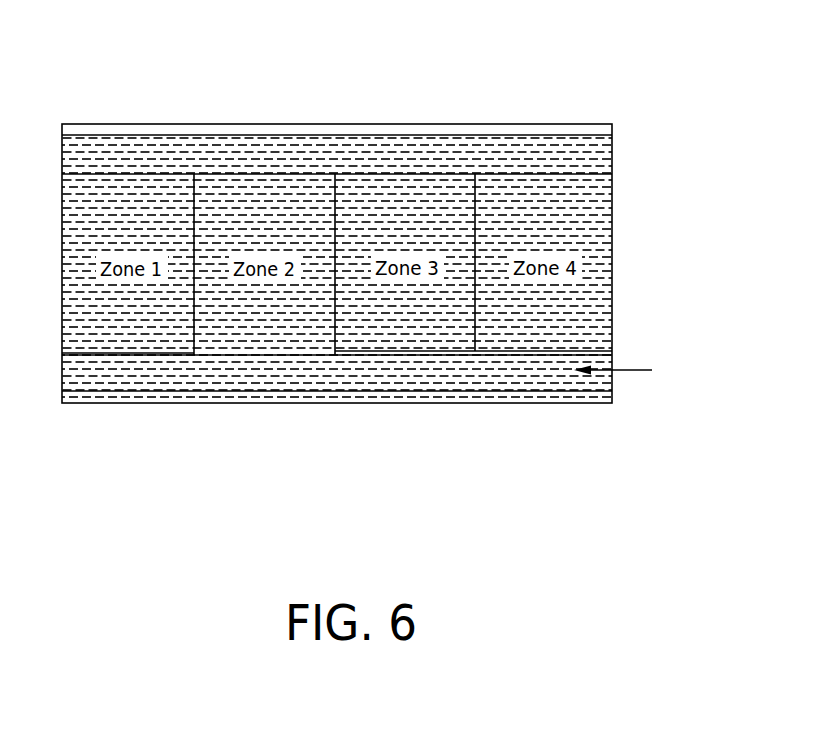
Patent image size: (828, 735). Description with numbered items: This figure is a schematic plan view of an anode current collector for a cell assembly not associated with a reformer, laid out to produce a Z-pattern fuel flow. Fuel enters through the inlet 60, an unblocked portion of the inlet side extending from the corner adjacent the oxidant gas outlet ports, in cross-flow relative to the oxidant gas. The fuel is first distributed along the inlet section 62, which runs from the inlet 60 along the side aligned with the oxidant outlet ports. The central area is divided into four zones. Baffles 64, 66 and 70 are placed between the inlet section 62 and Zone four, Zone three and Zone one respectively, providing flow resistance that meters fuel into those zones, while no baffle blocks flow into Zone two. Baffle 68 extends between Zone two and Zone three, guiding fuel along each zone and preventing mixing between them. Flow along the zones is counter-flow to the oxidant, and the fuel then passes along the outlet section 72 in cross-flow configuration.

The inlet 60 is at (612, 372).
The inlet section 62 is at (350, 375).
The baffle 64 is at (558, 350).
The baffle 66 is at (437, 350).
The baffle 68 is at (335, 321).
The baffle 70 is at (130, 354).
The outlet section 72 is at (372, 152).